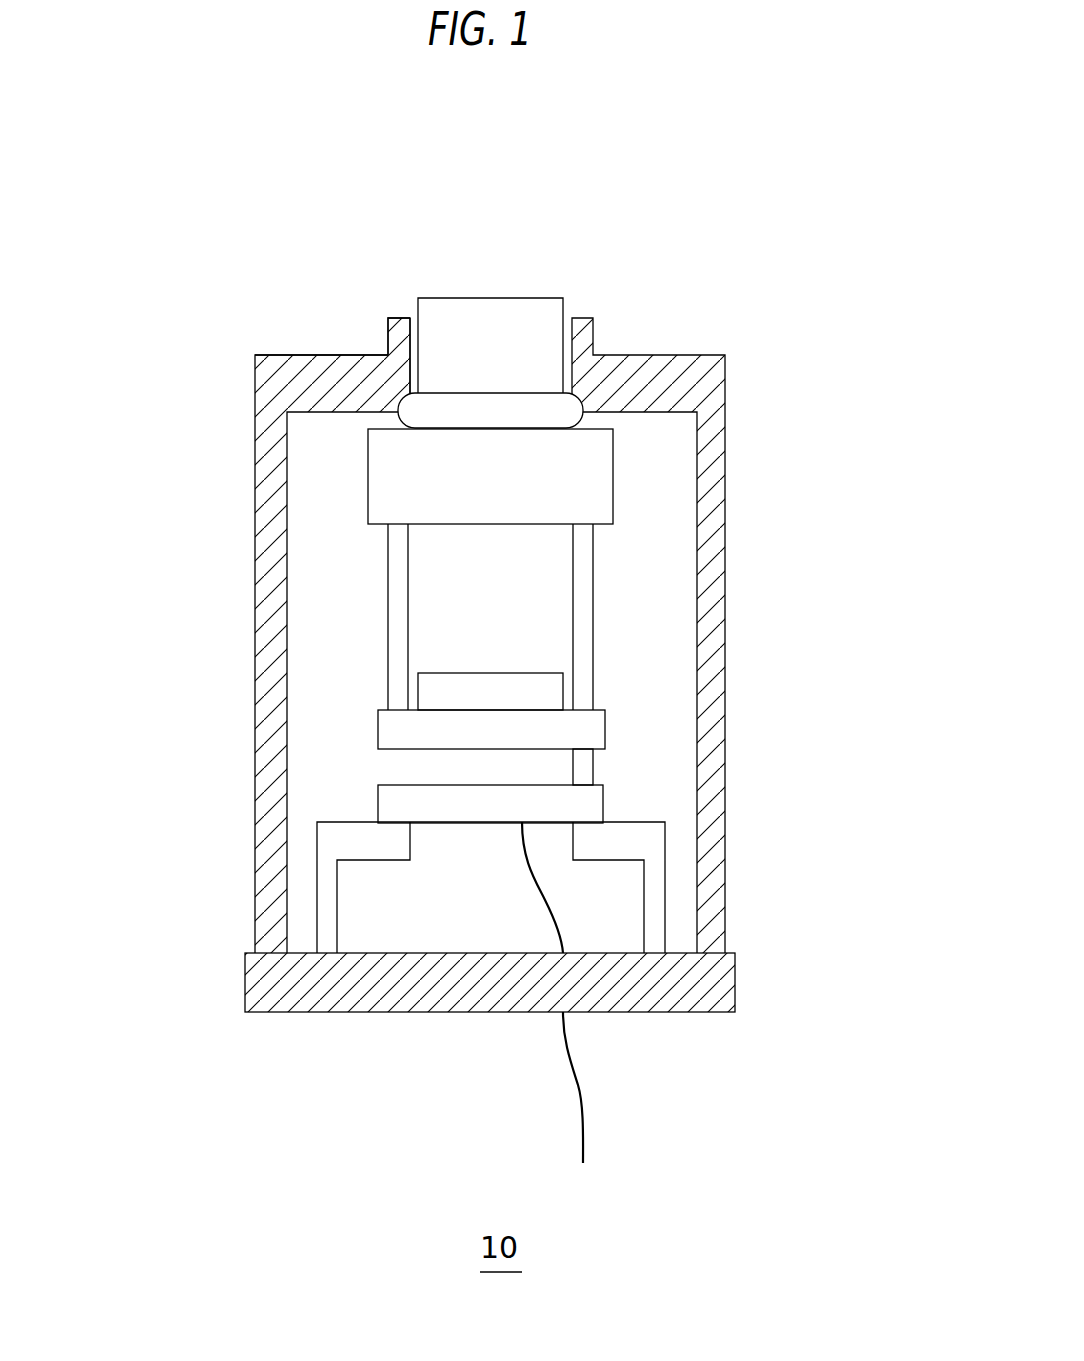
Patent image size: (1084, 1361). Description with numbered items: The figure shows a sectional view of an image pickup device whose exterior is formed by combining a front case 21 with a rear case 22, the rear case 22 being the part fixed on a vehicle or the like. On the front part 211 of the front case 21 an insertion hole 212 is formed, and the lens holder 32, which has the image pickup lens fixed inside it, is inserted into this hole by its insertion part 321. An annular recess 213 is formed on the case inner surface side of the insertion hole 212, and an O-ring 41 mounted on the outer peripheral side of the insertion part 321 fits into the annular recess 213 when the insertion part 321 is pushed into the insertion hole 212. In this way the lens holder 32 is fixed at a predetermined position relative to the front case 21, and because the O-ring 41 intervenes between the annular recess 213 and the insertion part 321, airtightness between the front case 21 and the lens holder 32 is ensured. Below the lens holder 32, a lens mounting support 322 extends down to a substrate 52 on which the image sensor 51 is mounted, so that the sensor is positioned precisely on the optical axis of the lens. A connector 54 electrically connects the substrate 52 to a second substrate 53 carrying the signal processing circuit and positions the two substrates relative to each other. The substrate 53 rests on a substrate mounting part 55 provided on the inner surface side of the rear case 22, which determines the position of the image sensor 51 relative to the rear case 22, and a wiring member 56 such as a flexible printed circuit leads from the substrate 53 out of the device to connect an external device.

The front case 21 is at (267, 623).
The front part 211 is at (303, 353).
The insertion hole 212 is at (412, 318).
The annular recess 213 is at (402, 392).
The rear case 22 is at (268, 995).
The lens holder 32 is at (613, 477).
The insertion part 321 is at (527, 343).
The lens mounting support 322 is at (393, 583).
The O-ring 41 is at (465, 413).
The image sensor 51 is at (550, 690).
The substrate 52 is at (585, 735).
The substrate 53 is at (592, 802).
The connector 54 is at (583, 765).
The substrate mounting part 55 is at (653, 899).
The wiring member 56 is at (582, 1120).